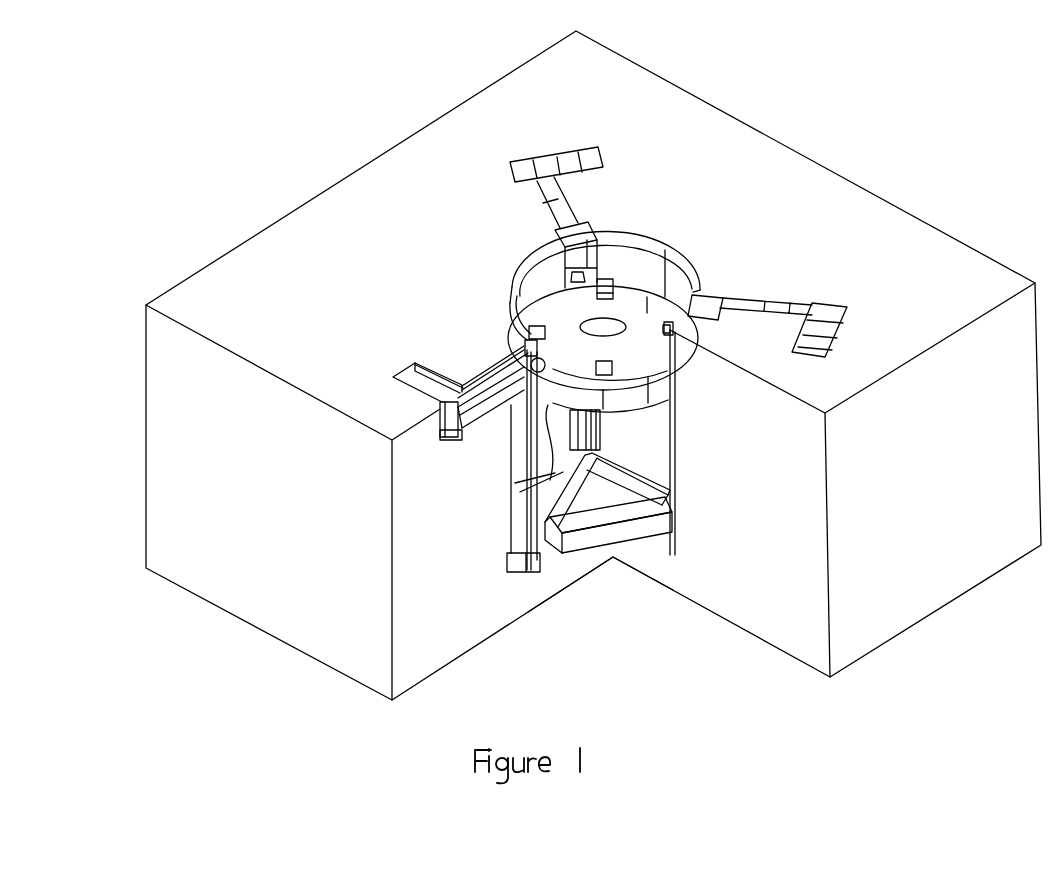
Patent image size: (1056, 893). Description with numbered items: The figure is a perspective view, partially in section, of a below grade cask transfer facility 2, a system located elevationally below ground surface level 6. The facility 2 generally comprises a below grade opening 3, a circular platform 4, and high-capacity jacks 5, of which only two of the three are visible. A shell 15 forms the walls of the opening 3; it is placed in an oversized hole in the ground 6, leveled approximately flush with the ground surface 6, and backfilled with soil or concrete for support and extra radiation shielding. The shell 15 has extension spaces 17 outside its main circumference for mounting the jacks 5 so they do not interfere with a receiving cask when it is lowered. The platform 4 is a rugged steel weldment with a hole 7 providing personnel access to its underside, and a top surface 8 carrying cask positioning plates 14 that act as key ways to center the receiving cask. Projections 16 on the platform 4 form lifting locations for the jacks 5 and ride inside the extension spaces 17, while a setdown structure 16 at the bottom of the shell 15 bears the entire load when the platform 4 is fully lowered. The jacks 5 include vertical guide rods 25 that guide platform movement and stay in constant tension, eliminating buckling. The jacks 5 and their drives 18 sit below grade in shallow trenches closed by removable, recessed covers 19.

The below grade cask transfer facility 2 is at (453, 252).
The below grade opening 3 is at (636, 431).
The circular platform 4 is at (528, 490).
The jacks 5 is at (565, 247).
The ground surface level 6 is at (228, 285).
The hole 7 is at (608, 333).
The top surface 8 is at (647, 297).
The cask positioning plates 14 is at (605, 280).
The shell 15 is at (697, 275).
The projections 16 is at (545, 437).
The extension spaces 17 is at (518, 343).
The drives 18 is at (452, 397).
The removable, recessed covers 19 is at (827, 307).
The guide rods 25 is at (513, 553).